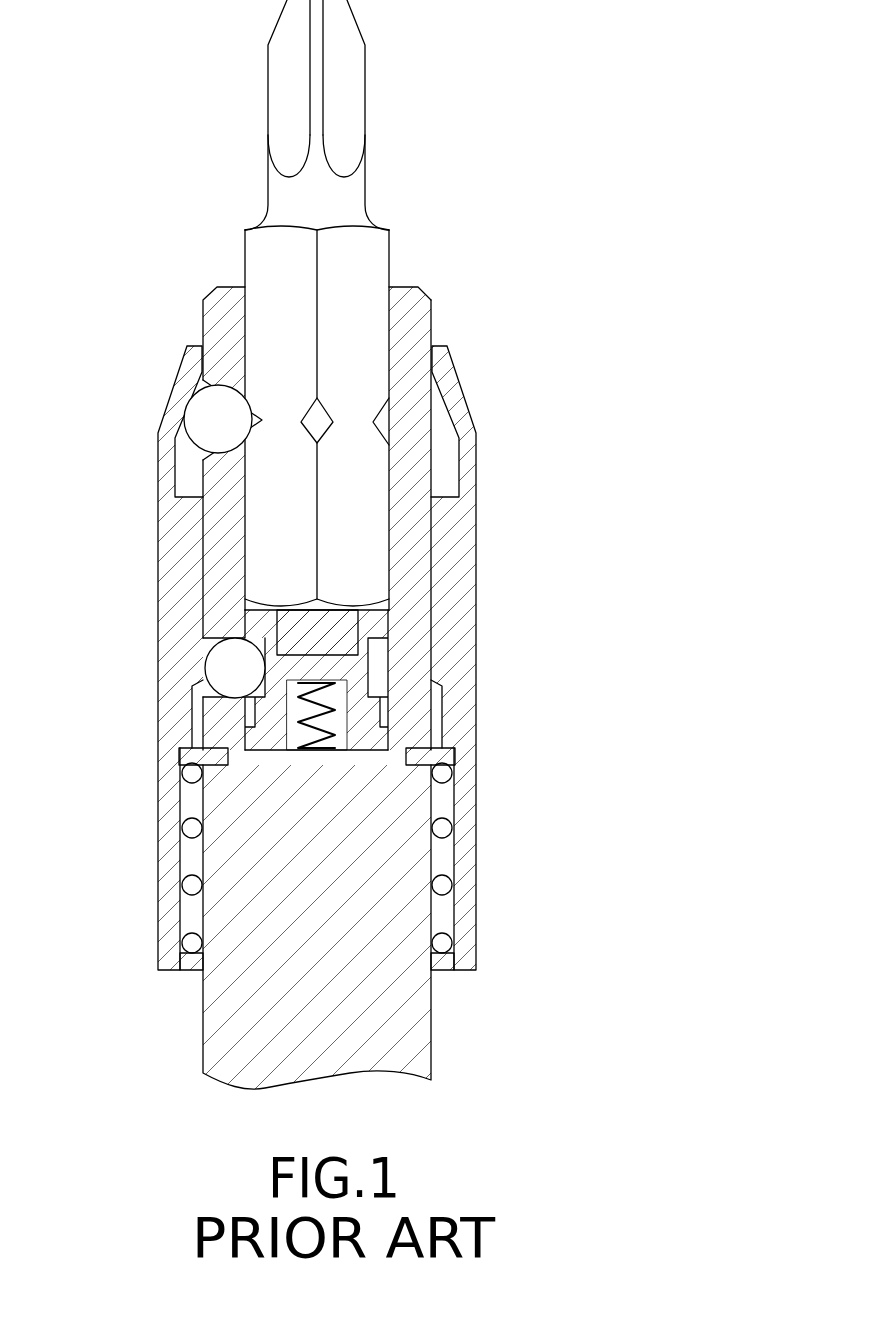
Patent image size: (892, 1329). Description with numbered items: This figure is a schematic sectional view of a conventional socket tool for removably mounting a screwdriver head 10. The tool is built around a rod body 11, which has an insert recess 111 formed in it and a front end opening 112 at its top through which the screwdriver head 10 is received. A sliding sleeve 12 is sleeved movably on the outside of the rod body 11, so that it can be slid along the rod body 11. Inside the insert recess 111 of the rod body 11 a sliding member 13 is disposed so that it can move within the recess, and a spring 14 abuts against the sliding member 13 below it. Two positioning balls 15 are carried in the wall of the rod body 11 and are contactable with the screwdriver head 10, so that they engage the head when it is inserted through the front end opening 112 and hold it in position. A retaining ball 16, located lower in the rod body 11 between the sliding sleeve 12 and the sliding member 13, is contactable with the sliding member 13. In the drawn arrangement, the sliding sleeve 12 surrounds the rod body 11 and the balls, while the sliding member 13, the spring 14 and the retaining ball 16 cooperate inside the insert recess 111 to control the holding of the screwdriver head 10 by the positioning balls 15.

The screwdriver head 10 is at (353, 83).
The rod body 11 is at (422, 313).
The insert recess 111 is at (383, 422).
The front end opening 112 is at (390, 287).
The sliding sleeve 12 is at (460, 583).
The sliding member 13 is at (273, 717).
The spring 14 is at (310, 727).
The positioning ball 15 is at (212, 420).
The retaining ball 16 is at (228, 668).